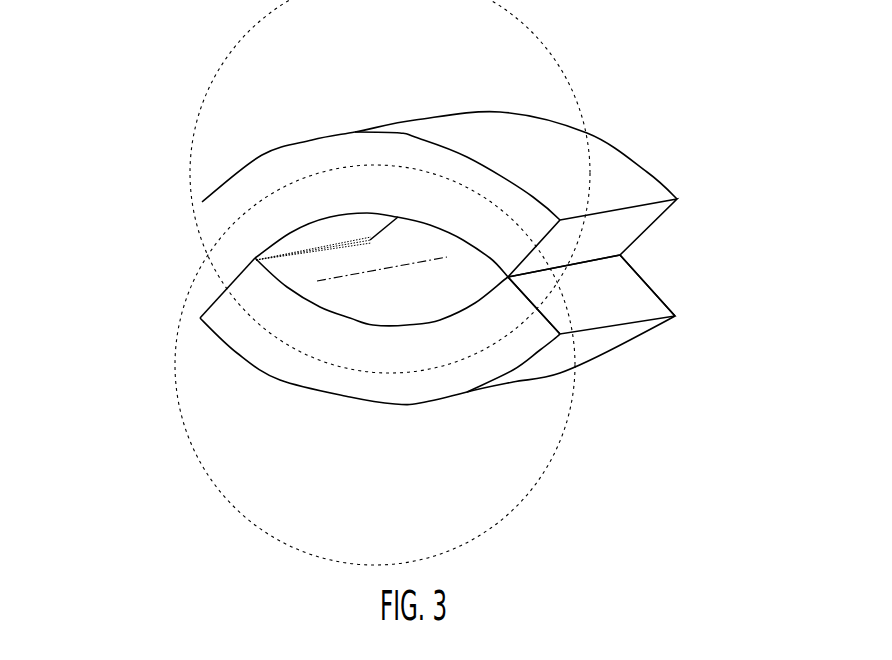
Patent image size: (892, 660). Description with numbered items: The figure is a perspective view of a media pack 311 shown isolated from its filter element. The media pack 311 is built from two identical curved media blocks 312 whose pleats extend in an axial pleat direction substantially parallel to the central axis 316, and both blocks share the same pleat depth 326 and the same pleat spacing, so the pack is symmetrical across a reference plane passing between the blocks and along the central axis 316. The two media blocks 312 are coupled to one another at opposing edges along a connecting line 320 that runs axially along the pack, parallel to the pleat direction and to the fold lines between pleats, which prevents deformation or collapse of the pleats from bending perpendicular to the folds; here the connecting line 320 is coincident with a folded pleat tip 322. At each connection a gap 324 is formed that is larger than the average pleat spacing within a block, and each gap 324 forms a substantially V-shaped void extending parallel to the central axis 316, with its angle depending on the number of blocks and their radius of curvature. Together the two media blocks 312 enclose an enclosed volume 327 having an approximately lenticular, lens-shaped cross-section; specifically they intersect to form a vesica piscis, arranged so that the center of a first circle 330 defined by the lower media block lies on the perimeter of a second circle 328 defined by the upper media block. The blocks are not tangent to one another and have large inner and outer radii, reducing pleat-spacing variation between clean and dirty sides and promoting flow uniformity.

The media pack 311 is at (172, 88).
The media block 312 is at (628, 177).
The central axis 316 is at (367, 272).
The connecting line 320 is at (612, 258).
The folded pleat tip 322 is at (580, 264).
The gap 324 is at (640, 304).
The pleat depth 326 is at (257, 262).
The enclosed volume 327 is at (307, 282).
The second circle 328 is at (220, 493).
The first circle 330 is at (190, 143).